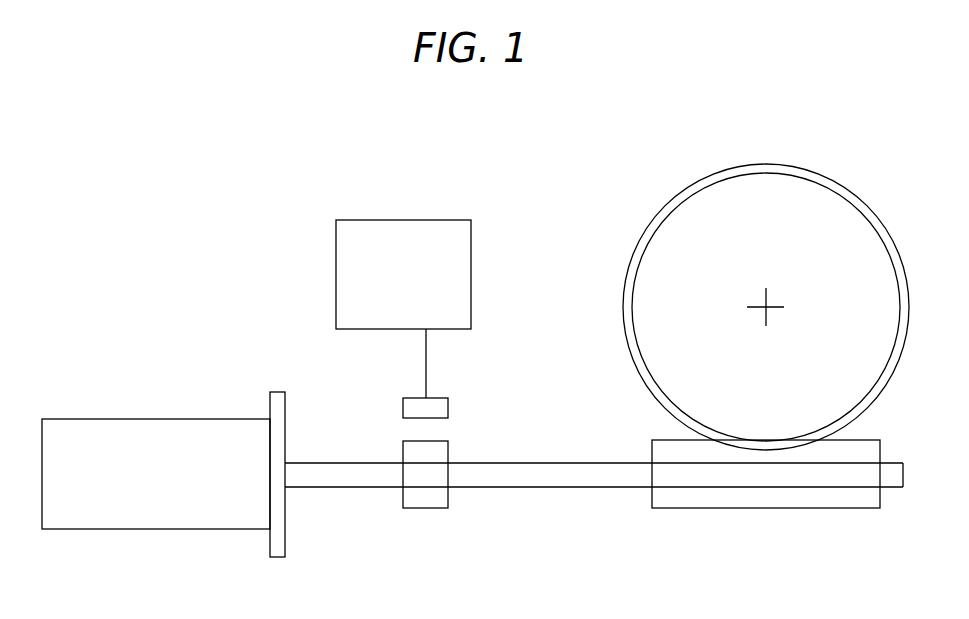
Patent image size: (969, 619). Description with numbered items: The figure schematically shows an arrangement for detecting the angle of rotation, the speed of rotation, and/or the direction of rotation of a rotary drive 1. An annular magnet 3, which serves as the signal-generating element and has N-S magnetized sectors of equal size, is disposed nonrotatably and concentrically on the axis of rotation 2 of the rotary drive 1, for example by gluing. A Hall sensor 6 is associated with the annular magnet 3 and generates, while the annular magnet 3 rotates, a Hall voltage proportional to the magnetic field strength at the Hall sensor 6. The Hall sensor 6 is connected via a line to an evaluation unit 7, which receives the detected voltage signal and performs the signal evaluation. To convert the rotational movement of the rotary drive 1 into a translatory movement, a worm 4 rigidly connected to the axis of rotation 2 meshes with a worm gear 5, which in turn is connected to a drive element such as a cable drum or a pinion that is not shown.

The rotary drive 1 is at (137, 508).
The axis of rotation 2 is at (323, 475).
The annular magnet 3 is at (425, 497).
The worm 4 is at (715, 495).
The worm gear 5 is at (780, 205).
The Hall sensor 6 is at (437, 408).
The evaluation unit 7 is at (369, 231).